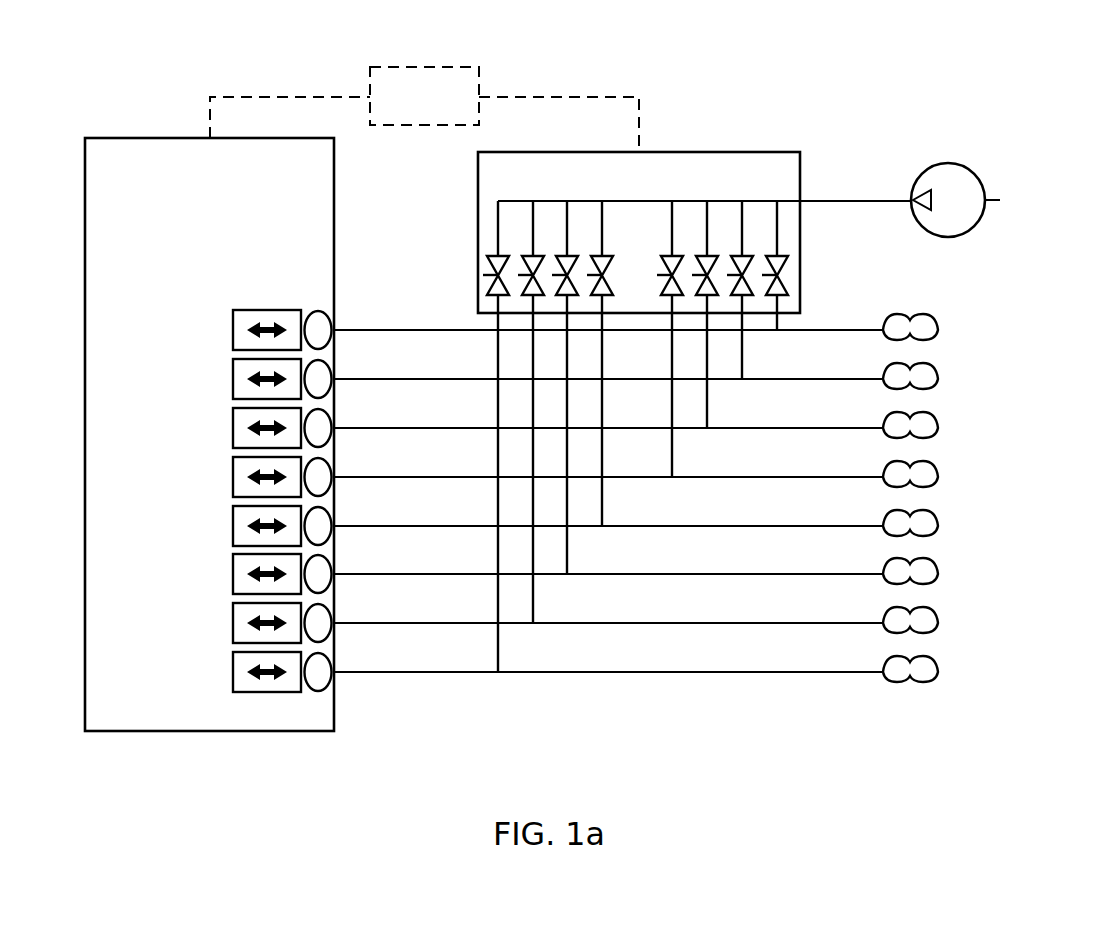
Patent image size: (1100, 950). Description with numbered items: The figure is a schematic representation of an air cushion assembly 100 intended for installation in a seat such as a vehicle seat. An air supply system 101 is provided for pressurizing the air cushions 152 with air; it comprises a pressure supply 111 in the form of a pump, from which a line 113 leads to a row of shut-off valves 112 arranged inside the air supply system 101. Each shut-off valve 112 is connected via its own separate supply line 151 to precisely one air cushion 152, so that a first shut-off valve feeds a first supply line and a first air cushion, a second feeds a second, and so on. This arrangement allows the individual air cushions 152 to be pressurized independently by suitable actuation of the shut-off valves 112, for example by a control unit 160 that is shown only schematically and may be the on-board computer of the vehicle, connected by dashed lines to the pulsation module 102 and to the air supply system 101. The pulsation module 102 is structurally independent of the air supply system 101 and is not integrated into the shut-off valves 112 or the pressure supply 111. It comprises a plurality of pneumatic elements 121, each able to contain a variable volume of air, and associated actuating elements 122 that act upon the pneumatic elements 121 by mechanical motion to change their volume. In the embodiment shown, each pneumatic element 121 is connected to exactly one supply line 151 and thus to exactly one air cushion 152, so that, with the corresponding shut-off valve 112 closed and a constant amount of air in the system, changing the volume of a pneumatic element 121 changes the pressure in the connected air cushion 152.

The air cushion assembly 100 is at (1046, 172).
The air supply system 101 is at (879, 264).
The pulsation module 102 is at (108, 135).
The pressure supply 111 is at (935, 164).
The shut-off valve 112 is at (790, 271).
The line 113 is at (725, 201).
The pneumatic element 121 is at (316, 310).
The actuating element 122 is at (233, 330).
The supply line 151 is at (376, 328).
The air cushion 152 is at (938, 335).
The control unit 160 is at (440, 65).